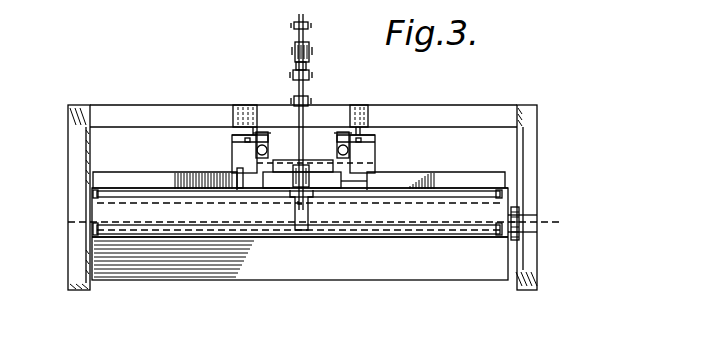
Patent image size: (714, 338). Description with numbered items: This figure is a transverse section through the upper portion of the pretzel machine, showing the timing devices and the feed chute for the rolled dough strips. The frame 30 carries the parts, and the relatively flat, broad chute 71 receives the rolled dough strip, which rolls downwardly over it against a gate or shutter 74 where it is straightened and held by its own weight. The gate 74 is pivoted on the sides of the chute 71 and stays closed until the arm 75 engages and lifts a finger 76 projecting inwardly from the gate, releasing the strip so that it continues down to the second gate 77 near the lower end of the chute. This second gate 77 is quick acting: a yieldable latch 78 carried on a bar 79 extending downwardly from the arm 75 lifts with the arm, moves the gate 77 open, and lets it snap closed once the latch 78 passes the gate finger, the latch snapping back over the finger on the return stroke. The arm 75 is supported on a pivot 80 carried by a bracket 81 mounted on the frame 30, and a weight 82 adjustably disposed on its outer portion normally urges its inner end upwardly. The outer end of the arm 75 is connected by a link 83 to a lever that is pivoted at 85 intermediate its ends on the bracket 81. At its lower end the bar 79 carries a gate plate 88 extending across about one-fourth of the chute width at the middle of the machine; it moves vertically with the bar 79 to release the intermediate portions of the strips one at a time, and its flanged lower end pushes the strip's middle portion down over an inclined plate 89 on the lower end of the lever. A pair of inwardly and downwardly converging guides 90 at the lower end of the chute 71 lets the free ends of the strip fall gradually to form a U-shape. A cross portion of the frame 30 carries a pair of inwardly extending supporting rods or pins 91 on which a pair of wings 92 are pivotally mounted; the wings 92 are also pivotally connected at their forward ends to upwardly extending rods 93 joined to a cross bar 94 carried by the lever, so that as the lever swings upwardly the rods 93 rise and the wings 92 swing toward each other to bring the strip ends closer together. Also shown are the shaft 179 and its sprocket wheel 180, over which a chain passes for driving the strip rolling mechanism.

The frame 30 is at (493, 112).
The chute 71 is at (436, 268).
The gate or shutter 74 is at (378, 238).
The finger 76 is at (299, 225).
The second gate 77 is at (407, 210).
The yieldable latch 78 is at (258, 170).
The bar 79 is at (293, 168).
The pivot 80 is at (294, 73).
The bracket 81 is at (312, 70).
The weight 82 is at (296, 45).
The link 83 is at (293, 25).
The pivot 85 is at (295, 100).
The arm 75 is at (307, 38).
The gate plate 88 is at (367, 186).
The inclined plate 89 is at (372, 166).
The converging guides 90 is at (174, 173).
The supporting rods or pins 91 is at (238, 131).
The wings 92 is at (233, 147).
The upwardly extending rods 93 is at (256, 150).
The cross bar 94 is at (327, 142).
The shaft 179 is at (520, 224).
The sprocket wheel 180 is at (519, 208).